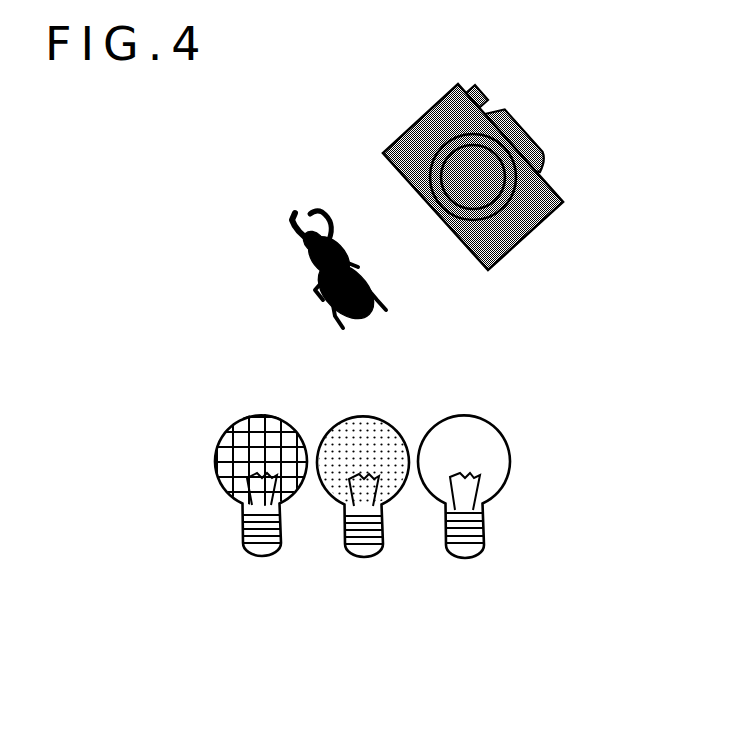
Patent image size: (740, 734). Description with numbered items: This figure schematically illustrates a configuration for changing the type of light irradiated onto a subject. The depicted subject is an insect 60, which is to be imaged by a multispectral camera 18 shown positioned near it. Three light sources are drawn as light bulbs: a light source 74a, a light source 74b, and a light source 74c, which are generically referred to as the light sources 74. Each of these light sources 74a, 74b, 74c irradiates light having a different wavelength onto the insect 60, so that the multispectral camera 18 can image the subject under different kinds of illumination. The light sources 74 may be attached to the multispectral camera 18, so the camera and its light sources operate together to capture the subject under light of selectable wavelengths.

The multispectral camera 18 is at (571, 180).
The insect 60 is at (294, 279).
The light sources 74 is at (355, 552).
The light source 74a is at (263, 577).
The light source 74b is at (362, 577).
The light source 74c is at (464, 536).